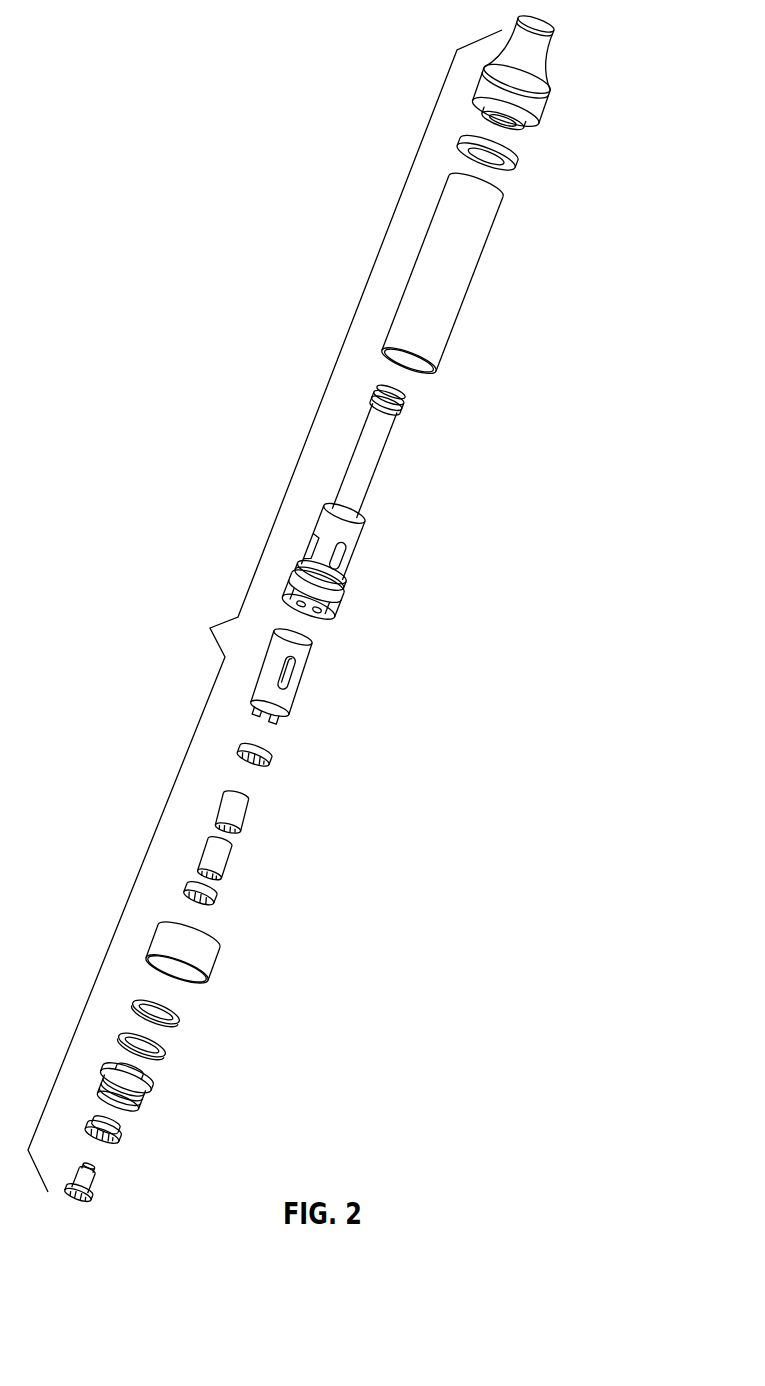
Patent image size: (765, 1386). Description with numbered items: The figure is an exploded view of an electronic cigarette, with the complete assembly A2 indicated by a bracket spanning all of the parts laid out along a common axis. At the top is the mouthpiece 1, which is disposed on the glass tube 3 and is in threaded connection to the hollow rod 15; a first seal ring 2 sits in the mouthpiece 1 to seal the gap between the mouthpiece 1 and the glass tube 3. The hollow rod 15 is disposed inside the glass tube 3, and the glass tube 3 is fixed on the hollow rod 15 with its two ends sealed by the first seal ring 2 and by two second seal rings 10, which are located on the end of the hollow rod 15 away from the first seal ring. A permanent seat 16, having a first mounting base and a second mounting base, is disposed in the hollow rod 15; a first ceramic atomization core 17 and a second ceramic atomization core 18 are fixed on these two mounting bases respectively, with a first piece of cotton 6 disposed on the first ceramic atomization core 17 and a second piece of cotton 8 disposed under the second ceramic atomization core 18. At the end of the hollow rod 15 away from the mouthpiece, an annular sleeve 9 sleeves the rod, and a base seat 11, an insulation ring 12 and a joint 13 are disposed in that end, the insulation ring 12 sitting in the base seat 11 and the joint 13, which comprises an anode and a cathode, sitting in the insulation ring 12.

The atomizer assembly A2 is at (265, 611).
The mouthpiece 1 is at (548, 68).
The first seal ring 2 is at (522, 162).
The glass tube 3 is at (475, 292).
The hollow rod 15 is at (380, 502).
The permanent seat 16 is at (300, 690).
The first piece of cotton 6 is at (273, 757).
The first ceramic atomization core 17 is at (250, 813).
The second ceramic atomization core 18 is at (233, 870).
The second piece of cotton 8 is at (218, 897).
The annular sleeve 9 is at (208, 961).
The second seal rings 10 is at (181, 1030).
The base seat 11 is at (155, 1096).
The insulation ring 12 is at (121, 1135).
The joint 13 is at (93, 1190).